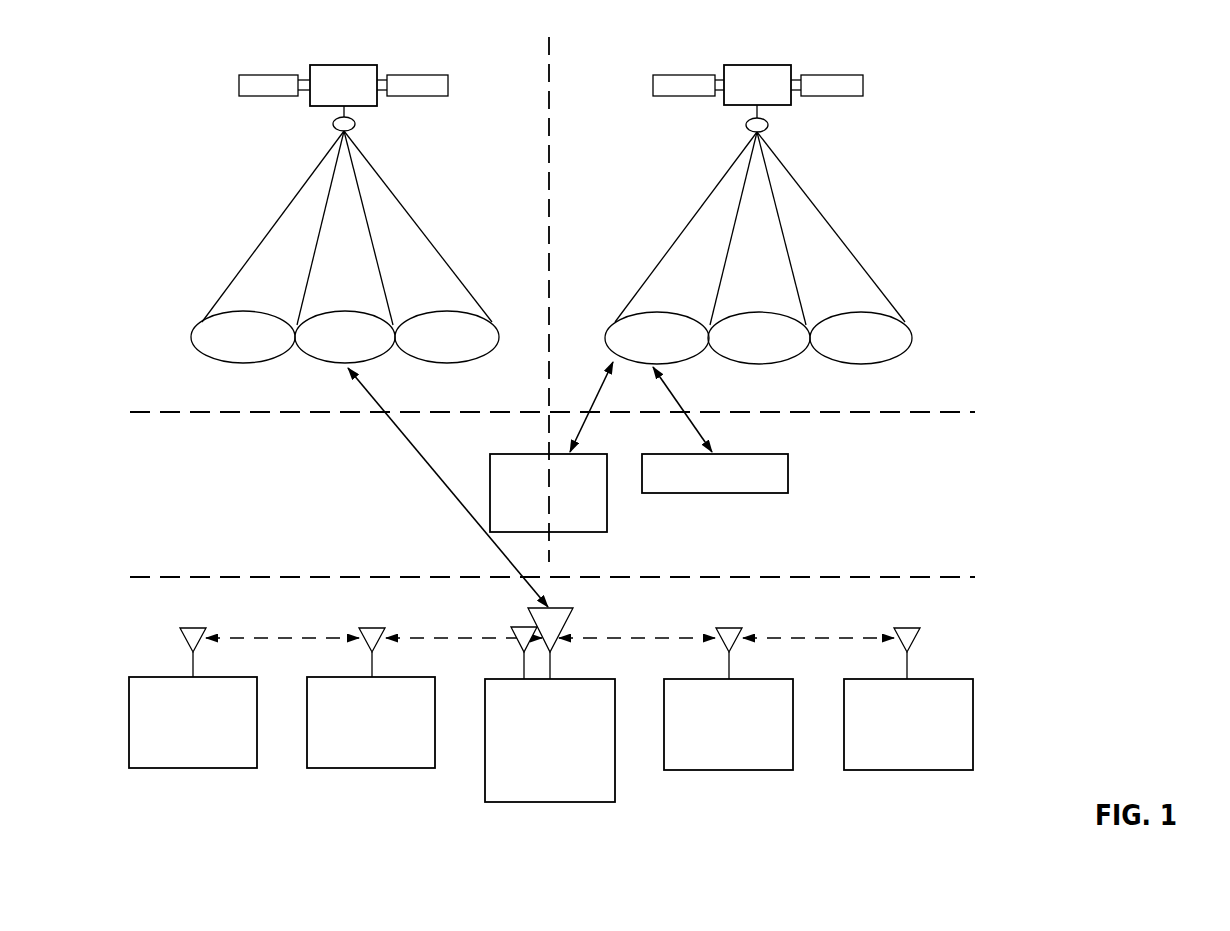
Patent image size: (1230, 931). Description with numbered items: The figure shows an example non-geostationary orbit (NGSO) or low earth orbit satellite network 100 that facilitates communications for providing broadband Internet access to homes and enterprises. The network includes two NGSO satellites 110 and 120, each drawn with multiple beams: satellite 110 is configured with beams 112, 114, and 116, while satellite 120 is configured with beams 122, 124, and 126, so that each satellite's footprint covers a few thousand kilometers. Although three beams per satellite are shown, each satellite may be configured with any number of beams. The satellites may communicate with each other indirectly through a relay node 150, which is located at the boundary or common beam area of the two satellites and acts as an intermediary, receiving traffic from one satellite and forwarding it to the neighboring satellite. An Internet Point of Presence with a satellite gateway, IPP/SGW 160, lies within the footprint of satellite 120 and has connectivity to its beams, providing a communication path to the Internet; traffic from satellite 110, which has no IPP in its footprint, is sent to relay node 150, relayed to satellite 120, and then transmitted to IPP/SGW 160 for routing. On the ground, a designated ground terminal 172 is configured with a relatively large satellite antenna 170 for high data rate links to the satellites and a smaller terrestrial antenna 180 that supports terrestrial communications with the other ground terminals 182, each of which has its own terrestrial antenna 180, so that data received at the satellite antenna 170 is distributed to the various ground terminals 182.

The NGSO satellite network 100 is at (949, 60).
The NGSO satellite 110 is at (358, 65).
The beam 112 is at (243, 337).
The beam 114 is at (345, 337).
The beam 116 is at (447, 337).
The NGSO satellite 120 is at (771, 65).
The beam 122 is at (657, 338).
The beam 124 is at (759, 338).
The beam 126 is at (861, 338).
The relay node 150 is at (548, 493).
The IPP/SGW 160 is at (720, 454).
The satellite antenna 170 is at (532, 620).
The designated ground terminal 172 is at (550, 740).
The terrestrial antenna 180 is at (181, 628).
The ground terminal 182 is at (551, 723).